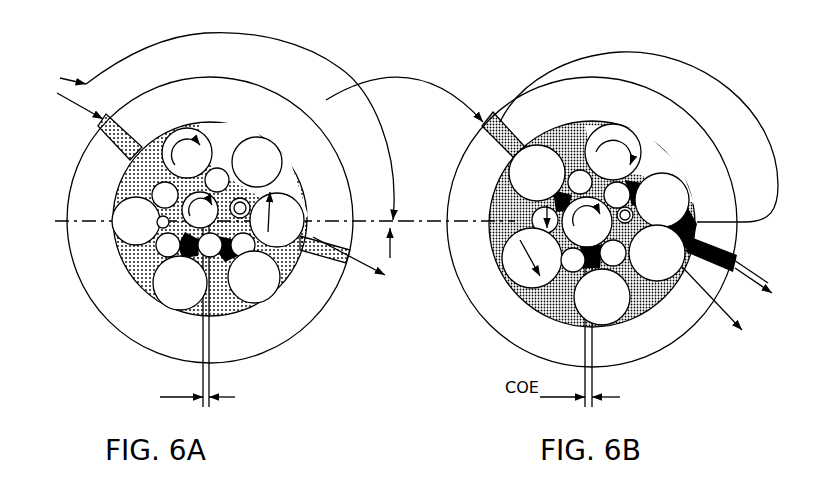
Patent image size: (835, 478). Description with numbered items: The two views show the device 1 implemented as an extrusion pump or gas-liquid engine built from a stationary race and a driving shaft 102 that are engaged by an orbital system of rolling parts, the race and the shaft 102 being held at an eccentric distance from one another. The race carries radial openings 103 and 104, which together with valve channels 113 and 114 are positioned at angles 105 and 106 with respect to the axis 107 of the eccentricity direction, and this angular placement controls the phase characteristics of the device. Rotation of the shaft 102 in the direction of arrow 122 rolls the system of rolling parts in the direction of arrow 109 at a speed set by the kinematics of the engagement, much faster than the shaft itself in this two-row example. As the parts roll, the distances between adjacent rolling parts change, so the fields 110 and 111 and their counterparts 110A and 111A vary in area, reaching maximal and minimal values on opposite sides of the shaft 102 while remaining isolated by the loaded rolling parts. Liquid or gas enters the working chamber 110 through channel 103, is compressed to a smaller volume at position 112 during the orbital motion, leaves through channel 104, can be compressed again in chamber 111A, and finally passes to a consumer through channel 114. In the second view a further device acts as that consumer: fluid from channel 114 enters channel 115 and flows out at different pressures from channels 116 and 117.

In FIG. 6A, the optical cable 1 is at (138, 113).
In FIG. 6A, the driving shaft 102 is at (205, 240).
In FIG. 6A, the radial opening 103 is at (112, 136).
In FIG. 6A, the radial opening 104 is at (330, 248).
In FIG. 6A, the angle 105 is at (390, 258).
In FIG. 6A, the angle 106 is at (306, 64).
In FIG. 6A, the axis 107 is at (425, 221).
In FIG. 6A, the optical fiber 109 is at (272, 196).
In FIG. 6A, the field 110 is at (133, 183).
In FIG. 6B, the field 110 is at (696, 222).
In FIG. 6B, the field 110A is at (500, 188).
In FIG. 6A, the field 111 is at (232, 228).
In FIG. 6A, the chamber 111A is at (192, 212).
In FIG. 6A, the position 112 is at (262, 222).
In FIG. 6A, the valve channel 113 is at (158, 227).
In FIG. 6A, the valve channel 114 is at (244, 226).
In FIG. 6B, the channel 115 is at (497, 120).
In FIG. 6B, the channel 116 is at (738, 258).
In FIG. 6B, the channel 117 is at (630, 210).
In FIG. 6A, the optical fiber 122 is at (170, 243).